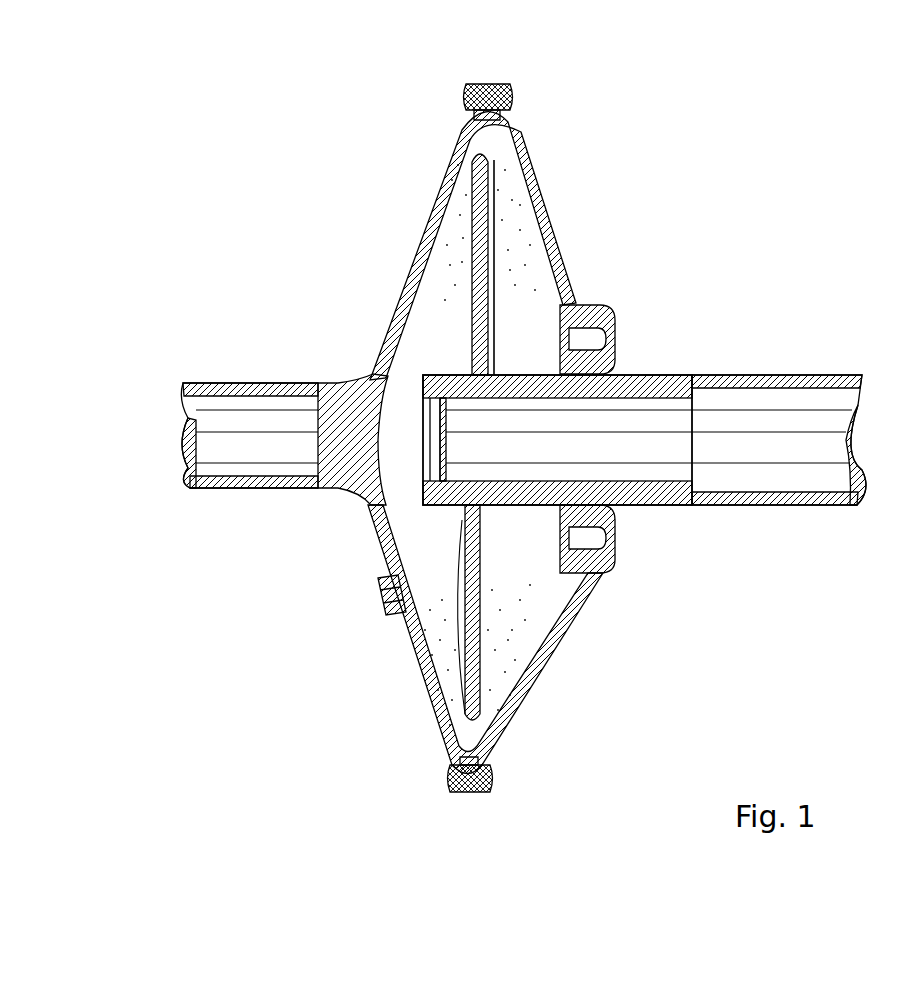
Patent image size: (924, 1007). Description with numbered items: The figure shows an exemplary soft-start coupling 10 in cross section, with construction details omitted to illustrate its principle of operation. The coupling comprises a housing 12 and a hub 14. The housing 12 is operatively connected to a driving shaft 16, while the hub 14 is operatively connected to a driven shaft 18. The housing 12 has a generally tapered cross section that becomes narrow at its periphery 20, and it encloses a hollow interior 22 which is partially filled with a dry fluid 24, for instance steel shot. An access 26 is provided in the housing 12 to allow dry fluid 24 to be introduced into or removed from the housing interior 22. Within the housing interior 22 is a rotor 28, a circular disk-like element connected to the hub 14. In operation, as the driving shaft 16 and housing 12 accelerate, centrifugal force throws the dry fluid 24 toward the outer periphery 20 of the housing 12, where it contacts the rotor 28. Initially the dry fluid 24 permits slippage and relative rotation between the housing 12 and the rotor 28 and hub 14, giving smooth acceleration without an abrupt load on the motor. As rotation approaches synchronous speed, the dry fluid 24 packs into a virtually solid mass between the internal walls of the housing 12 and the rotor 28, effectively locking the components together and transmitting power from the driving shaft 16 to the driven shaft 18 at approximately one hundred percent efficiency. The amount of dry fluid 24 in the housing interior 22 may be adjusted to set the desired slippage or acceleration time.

The soft-start coupling 10 is at (738, 122).
The housing 12 is at (420, 250).
The hub 14 is at (503, 368).
The driving shaft 16 is at (262, 382).
The driven shaft 18 is at (780, 378).
The periphery 20 is at (497, 120).
The hollow interior 22 is at (517, 558).
The dry fluid 24 is at (497, 663).
The access 26 is at (383, 583).
The rotor 28 is at (462, 565).